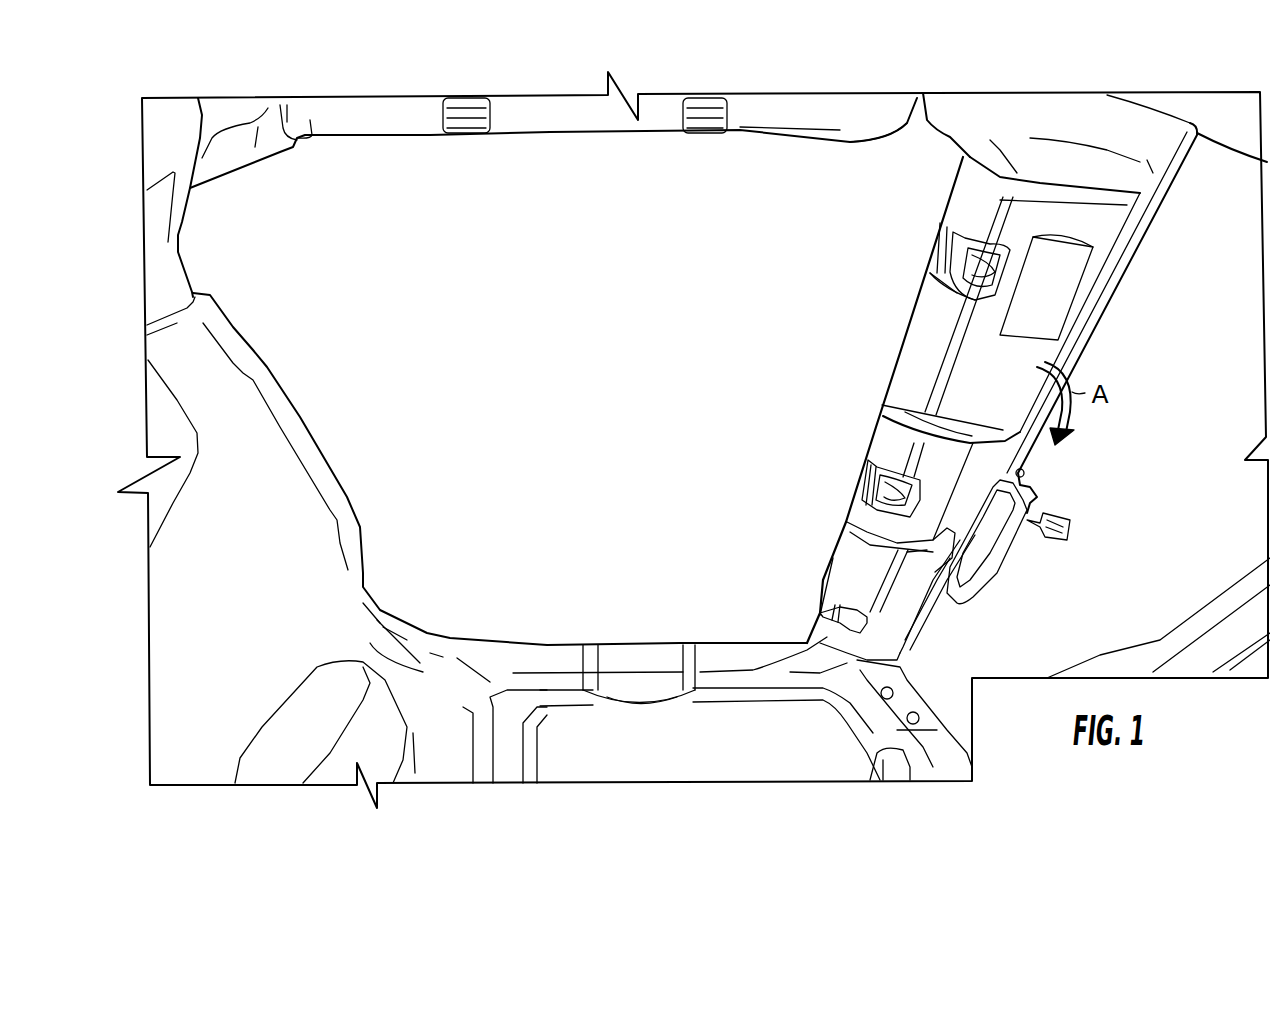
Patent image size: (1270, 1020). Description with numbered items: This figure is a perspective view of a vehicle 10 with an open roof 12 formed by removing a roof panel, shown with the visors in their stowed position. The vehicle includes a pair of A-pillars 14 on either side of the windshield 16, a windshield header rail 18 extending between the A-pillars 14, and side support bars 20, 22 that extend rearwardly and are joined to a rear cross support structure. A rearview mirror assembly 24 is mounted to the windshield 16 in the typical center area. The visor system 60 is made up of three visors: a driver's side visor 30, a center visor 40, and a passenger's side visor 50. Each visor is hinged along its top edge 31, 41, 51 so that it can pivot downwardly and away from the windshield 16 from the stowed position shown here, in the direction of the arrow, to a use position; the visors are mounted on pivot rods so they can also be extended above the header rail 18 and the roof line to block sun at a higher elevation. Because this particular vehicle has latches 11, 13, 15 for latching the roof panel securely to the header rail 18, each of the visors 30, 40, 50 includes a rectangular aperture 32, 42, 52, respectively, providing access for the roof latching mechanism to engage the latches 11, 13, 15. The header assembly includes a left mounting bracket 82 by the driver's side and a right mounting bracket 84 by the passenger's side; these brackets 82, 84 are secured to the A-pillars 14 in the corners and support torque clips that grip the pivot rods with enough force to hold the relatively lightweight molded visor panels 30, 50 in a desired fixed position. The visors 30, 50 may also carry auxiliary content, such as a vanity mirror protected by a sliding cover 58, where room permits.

The vehicle 10 is at (492, 603).
The latch 11 is at (833, 607).
The open roof 12 is at (527, 371).
The latch 13 is at (857, 487).
The A-pillar 14 is at (1233, 140).
The latch 15 is at (978, 252).
The windshield 16 is at (1159, 492).
The windshield header rail 18 is at (1100, 317).
The side support bar 20 is at (560, 134).
The side support bar 22 is at (573, 643).
The rearview mirror assembly 24 is at (997, 573).
The visor 30 is at (826, 577).
The top edge 31 is at (833, 560).
The rectangular aperture 32 is at (853, 607).
The visor 40 is at (872, 437).
The top edge 41 is at (883, 427).
The rectangular aperture 42 is at (907, 483).
The visor 50 is at (896, 355).
The top edge 51 is at (918, 317).
The rectangular aperture 52 is at (953, 283).
The cover 58 is at (1050, 288).
The visor system 60 is at (800, 389).
The left mounting bracket 82 is at (773, 650).
The right mounting bracket 84 is at (943, 140).